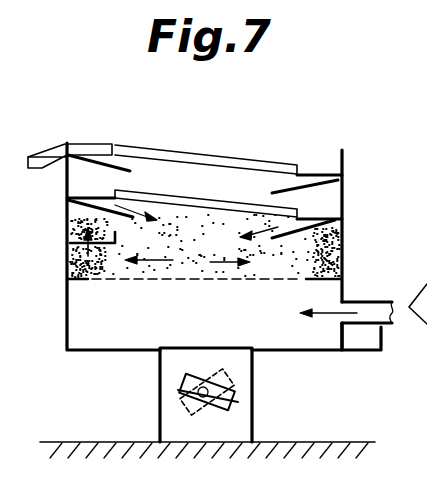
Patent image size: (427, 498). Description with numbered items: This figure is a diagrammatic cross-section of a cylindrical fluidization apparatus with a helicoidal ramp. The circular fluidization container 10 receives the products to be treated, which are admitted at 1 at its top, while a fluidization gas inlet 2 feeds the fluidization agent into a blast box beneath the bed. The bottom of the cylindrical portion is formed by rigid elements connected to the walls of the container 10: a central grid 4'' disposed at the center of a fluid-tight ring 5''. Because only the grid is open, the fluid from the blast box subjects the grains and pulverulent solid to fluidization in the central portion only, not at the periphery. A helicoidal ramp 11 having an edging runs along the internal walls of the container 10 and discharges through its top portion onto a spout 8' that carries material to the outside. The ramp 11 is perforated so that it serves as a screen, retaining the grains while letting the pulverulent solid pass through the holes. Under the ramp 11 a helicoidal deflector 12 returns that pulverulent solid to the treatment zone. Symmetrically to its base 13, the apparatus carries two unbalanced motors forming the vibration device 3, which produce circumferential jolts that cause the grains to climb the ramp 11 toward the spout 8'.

The product admission point 1 is at (203, 138).
The fluidization gas inlet 2 is at (378, 329).
The vibration device 3 is at (230, 401).
The central grid 4'' is at (220, 333).
The fluid-tight ring 5'' is at (167, 302).
The spout 8' is at (79, 138).
The circular fluidization container 10 is at (67, 258).
The helicoidal ramp 11 is at (318, 161).
The helicoidal deflector 12 is at (318, 237).
The base 13 is at (253, 380).